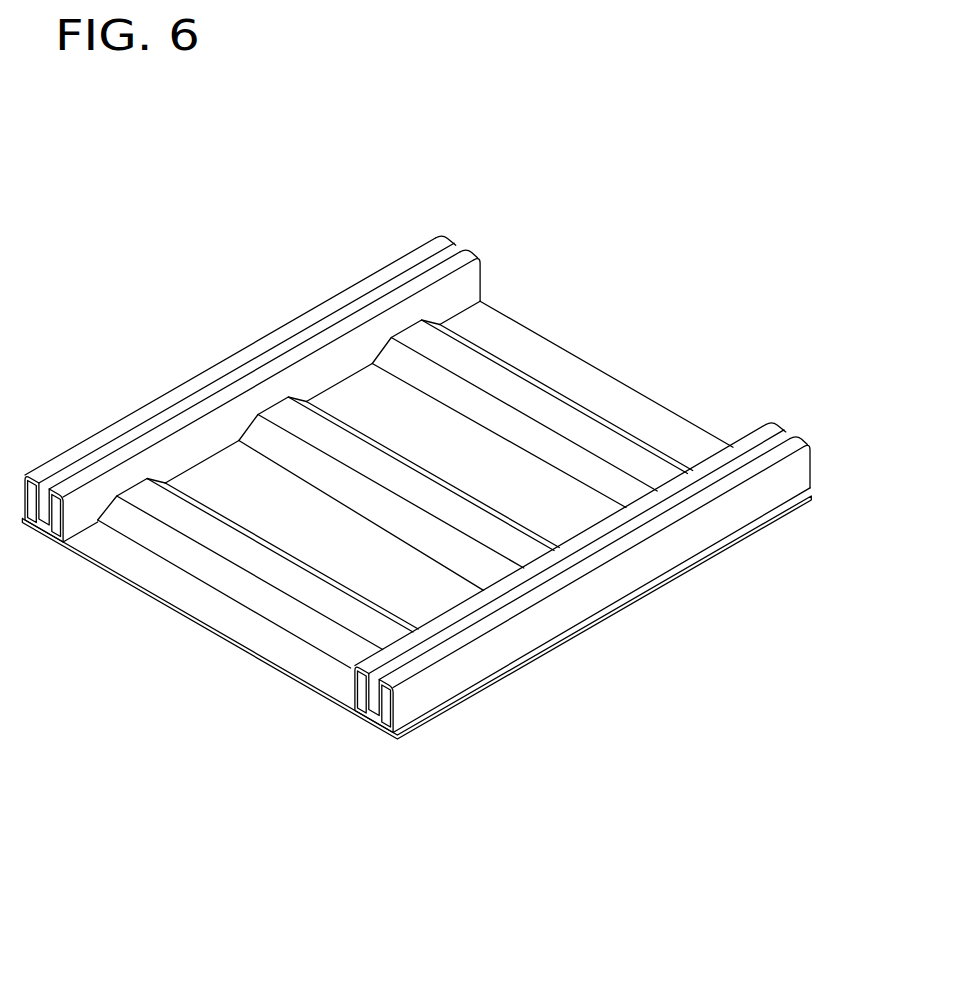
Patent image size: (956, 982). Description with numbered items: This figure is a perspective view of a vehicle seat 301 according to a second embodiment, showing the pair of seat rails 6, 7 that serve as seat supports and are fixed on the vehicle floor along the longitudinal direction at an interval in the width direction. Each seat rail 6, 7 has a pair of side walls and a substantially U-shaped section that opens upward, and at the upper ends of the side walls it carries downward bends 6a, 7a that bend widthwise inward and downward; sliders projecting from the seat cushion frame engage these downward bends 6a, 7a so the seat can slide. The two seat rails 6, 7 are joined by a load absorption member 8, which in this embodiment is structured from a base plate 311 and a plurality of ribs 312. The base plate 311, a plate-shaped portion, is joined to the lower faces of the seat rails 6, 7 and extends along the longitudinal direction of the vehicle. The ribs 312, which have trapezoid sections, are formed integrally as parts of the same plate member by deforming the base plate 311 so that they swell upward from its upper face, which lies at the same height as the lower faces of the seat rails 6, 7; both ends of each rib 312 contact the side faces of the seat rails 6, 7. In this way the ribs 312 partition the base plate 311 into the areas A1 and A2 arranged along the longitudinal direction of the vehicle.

The vehicle seat 301 is at (672, 300).
The load absorption member 8 is at (652, 397).
The base plate 311 is at (163, 583).
The ribs 312 is at (378, 623).
The seat rail 6 is at (284, 430).
The downward bend 6a is at (52, 515).
The seat rail 7 is at (618, 627).
The downward bend 7a is at (383, 705).
The area A1 is at (213, 470).
The area A2 is at (358, 392).